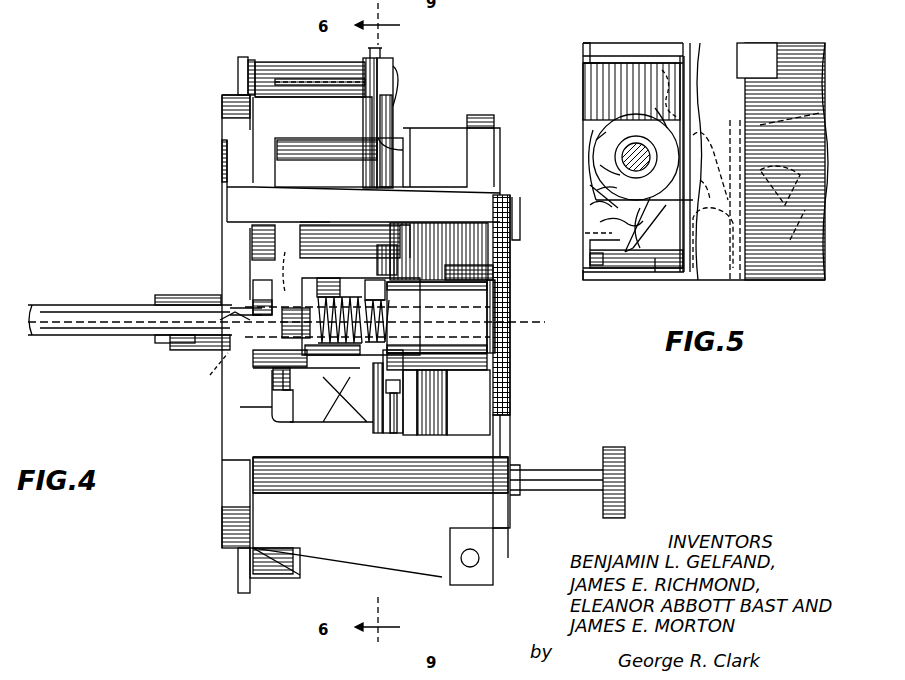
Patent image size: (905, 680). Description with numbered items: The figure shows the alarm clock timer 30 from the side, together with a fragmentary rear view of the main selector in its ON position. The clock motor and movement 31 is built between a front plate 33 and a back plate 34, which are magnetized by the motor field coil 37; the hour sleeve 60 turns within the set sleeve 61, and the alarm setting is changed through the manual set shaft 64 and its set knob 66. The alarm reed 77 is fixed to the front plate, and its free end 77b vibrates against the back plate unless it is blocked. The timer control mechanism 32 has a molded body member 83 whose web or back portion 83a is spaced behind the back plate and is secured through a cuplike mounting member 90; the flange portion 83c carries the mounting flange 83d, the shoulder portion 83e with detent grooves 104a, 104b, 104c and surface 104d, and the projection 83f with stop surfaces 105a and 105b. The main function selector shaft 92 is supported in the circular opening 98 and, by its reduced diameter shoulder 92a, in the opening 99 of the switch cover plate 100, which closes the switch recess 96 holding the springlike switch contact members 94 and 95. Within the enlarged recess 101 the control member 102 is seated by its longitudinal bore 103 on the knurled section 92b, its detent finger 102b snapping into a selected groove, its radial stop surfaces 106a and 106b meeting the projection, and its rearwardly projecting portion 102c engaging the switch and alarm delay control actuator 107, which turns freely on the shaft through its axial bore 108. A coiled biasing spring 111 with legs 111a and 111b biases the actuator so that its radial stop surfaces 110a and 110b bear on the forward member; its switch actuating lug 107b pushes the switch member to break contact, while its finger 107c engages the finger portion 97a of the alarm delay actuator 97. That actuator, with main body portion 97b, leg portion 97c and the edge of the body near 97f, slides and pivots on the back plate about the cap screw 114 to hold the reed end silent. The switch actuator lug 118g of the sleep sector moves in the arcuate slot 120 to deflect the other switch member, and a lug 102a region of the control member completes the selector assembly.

In FIG. 4, the alarm clock timer 30 is at (179, 592).
In FIG. 4, the clock motor and movement 31 is at (244, 46).
In FIG. 4, the timer control mechanism 32 is at (215, 189).
In FIG. 4, the front plate 33 is at (238, 68).
In FIG. 4, the back plate 34 is at (382, 66).
In FIG. 4, the motor field coil 37 is at (268, 82).
In FIG. 4, the hour sleeve 60 is at (160, 300).
In FIG. 4, the set sleeve 61 is at (160, 347).
In FIG. 4, the manual set shaft 64 is at (600, 470).
In FIG. 4, the set knob 66 is at (625, 465).
In FIG. 4, the alarm reed 77 is at (296, 134).
In FIG. 4, the free end of alarm reed 77b is at (367, 148).
In FIG. 4, the body member 83 is at (214, 135).
In FIG. 5, the body member 83 is at (645, 16).
In FIG. 4, the web or back portion 83a is at (484, 114).
In FIG. 4, the flange portion 83c is at (477, 195).
In FIG. 5, the flange portion 83c is at (582, 46).
In FIG. 4, the mounting flange 83d is at (225, 104).
In FIG. 5, the mounting flange 83d is at (583, 62).
In FIG. 4, the shoulder portion 83e is at (250, 407).
In FIG. 5, the shoulder portion 83e is at (595, 255).
In FIG. 4, the projection 83f is at (255, 295).
In FIG. 5, the projection 83f is at (659, 92).
In FIG. 4, the cuplike mounting member 90 is at (260, 585).
In FIG. 4, the main function selector shaft 92 is at (78, 308).
In FIG. 5, the main function selector shaft 92 is at (629, 145).
In FIG. 4, the reduced diameter shoulder 92a is at (298, 330).
In FIG. 4, the knurled section 92b is at (300, 276).
In FIG. 5, the switch contact member 94 is at (820, 113).
In FIG. 4, the switch contact member 95 is at (494, 552).
In FIG. 5, the switch contact member 95 is at (740, 285).
In FIG. 5, the switch recess 96 is at (823, 76).
In FIG. 4, the alarm delay actuator 97 is at (386, 86).
In FIG. 4, the finger portion 97a is at (393, 450).
In FIG. 5, the finger portion 97a is at (655, 273).
In FIG. 4, the main body portion 97b is at (395, 98).
In FIG. 4, the leg portion 97c is at (376, 445).
In FIG. 4, the lever slot 97f is at (304, 86).
In FIG. 4, the circular opening 98 is at (195, 348).
In FIG. 4, the opening 99 is at (510, 338).
In FIG. 4, the switch cover plate 100 is at (510, 514).
In FIG. 5, the switch cover plate 100 is at (800, 42).
In FIG. 4, the enlarged recess 101 is at (500, 404).
In FIG. 5, the enlarged recess 101 is at (635, 70).
In FIG. 4, the control member 102 is at (294, 233).
In FIG. 5, the control member 102 is at (600, 168).
In FIG. 4, the carrier lug 102a is at (352, 430).
In FIG. 4, the detent finger 102b is at (280, 422).
In FIG. 5, the detent finger 102b is at (598, 185).
In FIG. 4, the rearwardly projecting portion 102c is at (334, 232).
In FIG. 4, the longitudinal bore 103 is at (210, 375).
In FIG. 5, the detent groove 104a is at (675, 258).
In FIG. 5, the detent groove 104b is at (605, 234).
In FIG. 5, the detent groove 104c is at (597, 222).
In FIG. 5, the surface 104d is at (590, 200).
In FIG. 4, the stop surface 105a is at (252, 308).
In FIG. 5, the stop surface 105a is at (600, 155).
In FIG. 5, the stop surface 105b is at (649, 108).
In FIG. 4, the radial stop surface 106a is at (236, 320).
In FIG. 5, the radial stop surface 106a is at (600, 133).
In FIG. 5, the radial stop surface 106b is at (730, 182).
In FIG. 4, the switch and alarm delay control actuator 107 is at (427, 276).
In FIG. 5, the switch and alarm delay control actuator 107 is at (702, 146).
In FIG. 5, the switch actuating lug 107b is at (702, 167).
In FIG. 4, the finger 107c is at (410, 455).
In FIG. 5, the finger 107c is at (630, 260).
In FIG. 4, the axial bore 108 is at (480, 408).
In FIG. 5, the axial bore 108 is at (631, 91).
In FIG. 4, the radial stop surface 110a is at (372, 300).
In FIG. 4, the radial stop surface 110b is at (375, 382).
In FIG. 4, the coiled biasing spring 111 is at (308, 300).
In FIG. 4, the spring leg 111a is at (310, 365).
In FIG. 4, the spring leg 111b is at (400, 326).
In FIG. 4, the cap screw 114 is at (408, 144).
In FIG. 5, the switch actuator lug 118g is at (799, 238).
In FIG. 5, the arcuate slot 120 is at (783, 173).